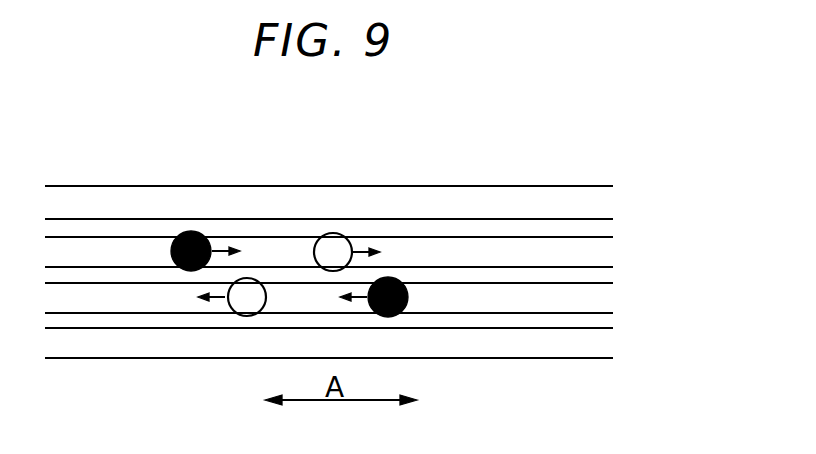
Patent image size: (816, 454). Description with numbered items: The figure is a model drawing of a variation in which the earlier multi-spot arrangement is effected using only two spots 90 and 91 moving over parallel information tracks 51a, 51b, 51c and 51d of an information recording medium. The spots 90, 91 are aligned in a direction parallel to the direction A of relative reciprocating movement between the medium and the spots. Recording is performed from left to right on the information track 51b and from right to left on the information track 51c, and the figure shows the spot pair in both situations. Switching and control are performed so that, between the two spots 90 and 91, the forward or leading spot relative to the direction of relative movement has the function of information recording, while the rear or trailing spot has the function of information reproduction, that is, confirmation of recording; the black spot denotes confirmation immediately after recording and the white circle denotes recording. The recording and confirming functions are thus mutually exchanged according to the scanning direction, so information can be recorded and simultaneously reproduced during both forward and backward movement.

The information track 51a is at (598, 205).
The information track 51b is at (598, 252).
The information track 51c is at (597, 298).
The information track 51d is at (598, 343).
The spot 90 is at (250, 279).
The spot 91 is at (388, 277).